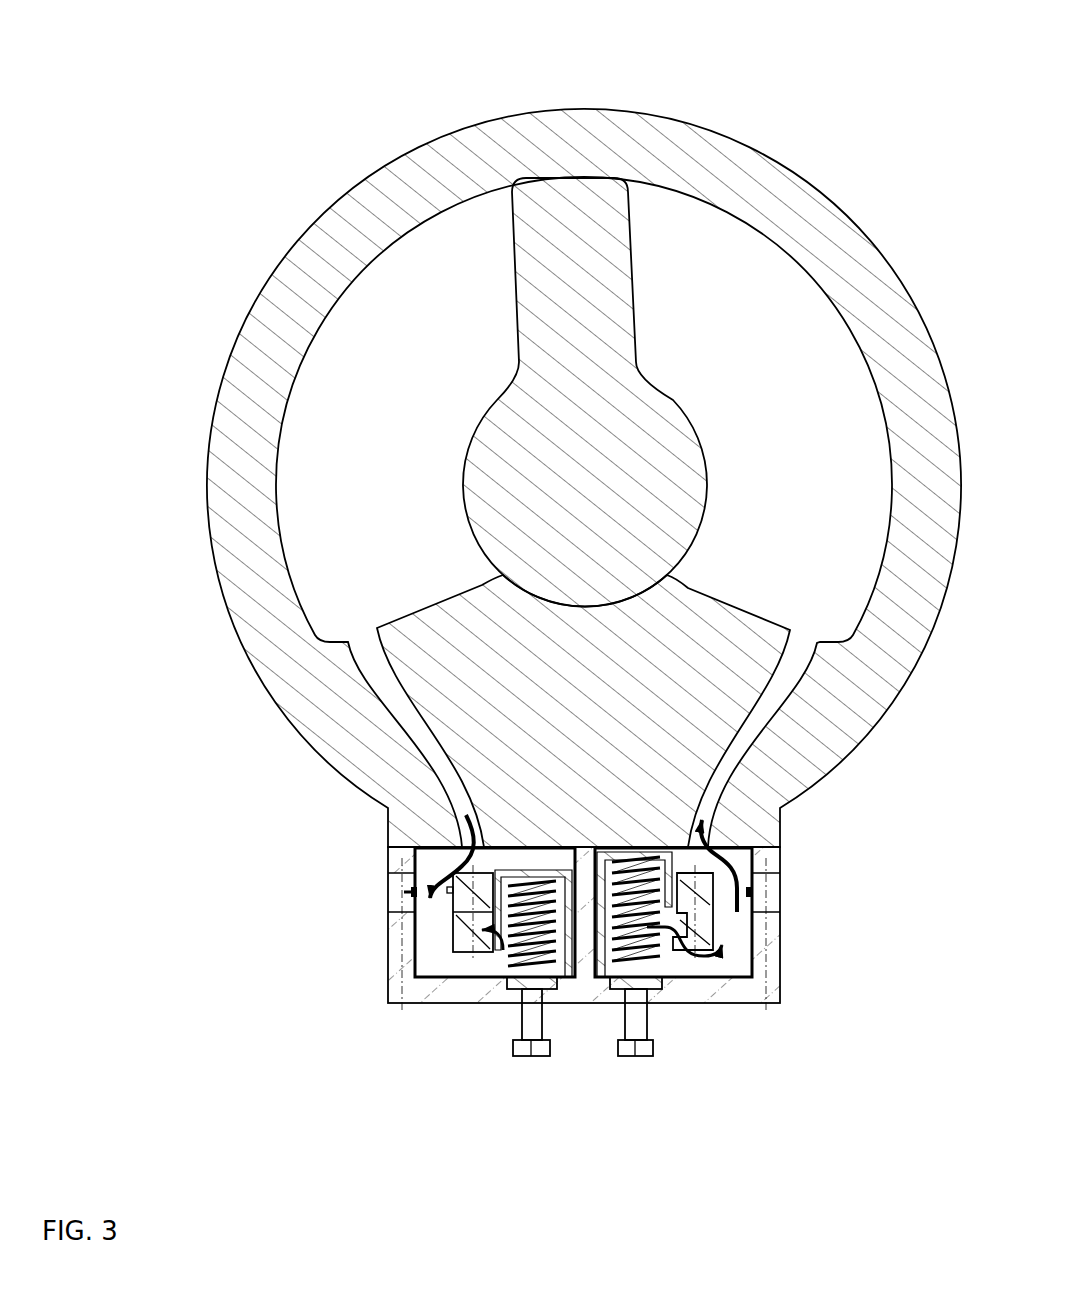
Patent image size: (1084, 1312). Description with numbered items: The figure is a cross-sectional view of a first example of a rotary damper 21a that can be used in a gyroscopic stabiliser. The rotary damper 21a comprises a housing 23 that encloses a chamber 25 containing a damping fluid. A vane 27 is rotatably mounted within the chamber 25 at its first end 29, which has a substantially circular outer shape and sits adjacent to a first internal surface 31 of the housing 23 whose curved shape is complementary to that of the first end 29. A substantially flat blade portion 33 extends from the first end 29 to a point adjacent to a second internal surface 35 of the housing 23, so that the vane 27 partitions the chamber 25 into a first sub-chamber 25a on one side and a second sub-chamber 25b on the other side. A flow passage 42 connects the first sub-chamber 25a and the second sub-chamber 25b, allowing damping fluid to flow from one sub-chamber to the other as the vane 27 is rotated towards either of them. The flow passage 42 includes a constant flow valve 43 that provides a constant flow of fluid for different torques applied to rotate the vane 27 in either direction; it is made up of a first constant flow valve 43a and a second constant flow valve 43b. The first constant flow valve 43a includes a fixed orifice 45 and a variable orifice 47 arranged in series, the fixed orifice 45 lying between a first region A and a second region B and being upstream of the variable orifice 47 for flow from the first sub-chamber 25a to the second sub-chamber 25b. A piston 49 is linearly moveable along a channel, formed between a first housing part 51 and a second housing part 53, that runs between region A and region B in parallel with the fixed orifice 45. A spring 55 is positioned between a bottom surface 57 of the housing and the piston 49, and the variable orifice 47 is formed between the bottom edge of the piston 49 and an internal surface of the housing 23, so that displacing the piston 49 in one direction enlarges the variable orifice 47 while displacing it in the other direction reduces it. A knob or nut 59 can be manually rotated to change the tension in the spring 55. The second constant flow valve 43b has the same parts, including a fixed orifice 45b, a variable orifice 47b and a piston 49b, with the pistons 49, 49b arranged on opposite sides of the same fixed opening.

The rotary damper 21a is at (297, 170).
The housing 23 is at (205, 498).
The chamber 25 is at (740, 353).
The first sub-chamber 25a is at (365, 335).
The second sub-chamber 25b is at (793, 365).
The vane 27 is at (461, 453).
The first end 29 is at (515, 499).
The first internal surface 31 is at (661, 578).
The blade portion 33 is at (583, 233).
The second internal surface 35 is at (875, 395).
The flow passage 42 is at (383, 673).
The constant flow valve 43 is at (783, 953).
The first constant flow valve 43a is at (550, 1007).
The second constant flow valve 43b is at (763, 1003).
The fixed orifice 45 is at (405, 892).
The fixed orifice 45b is at (754, 892).
The variable orifice 47 is at (492, 933).
The variable orifice 47b is at (603, 942).
The piston 49 is at (478, 918).
The piston 49b is at (705, 845).
The first housing part 51 is at (387, 873).
The second housing part 53 is at (450, 932).
The spring 55 is at (503, 963).
The bottom surface 57 is at (460, 1004).
The knob or nut 59 is at (513, 1018).